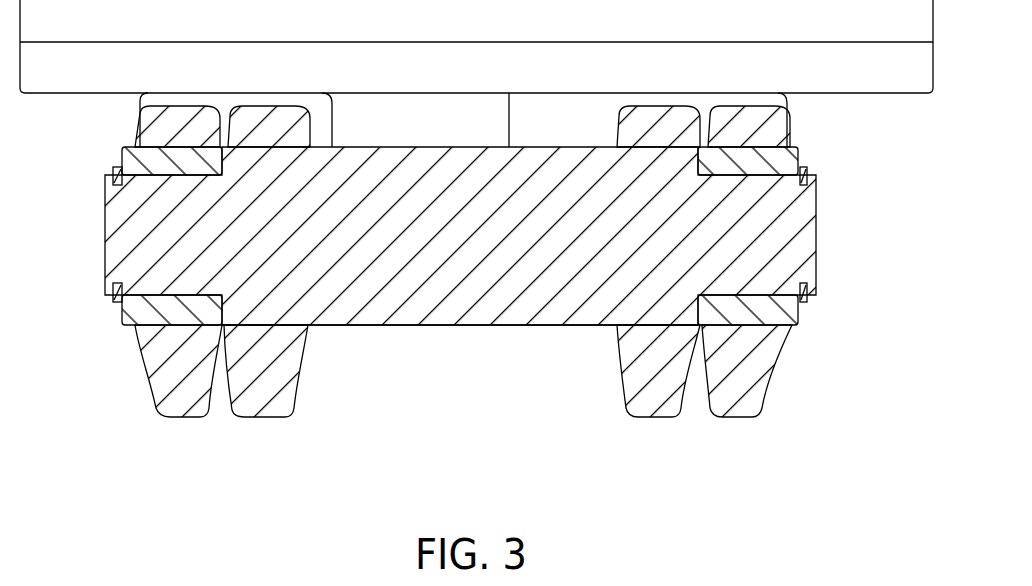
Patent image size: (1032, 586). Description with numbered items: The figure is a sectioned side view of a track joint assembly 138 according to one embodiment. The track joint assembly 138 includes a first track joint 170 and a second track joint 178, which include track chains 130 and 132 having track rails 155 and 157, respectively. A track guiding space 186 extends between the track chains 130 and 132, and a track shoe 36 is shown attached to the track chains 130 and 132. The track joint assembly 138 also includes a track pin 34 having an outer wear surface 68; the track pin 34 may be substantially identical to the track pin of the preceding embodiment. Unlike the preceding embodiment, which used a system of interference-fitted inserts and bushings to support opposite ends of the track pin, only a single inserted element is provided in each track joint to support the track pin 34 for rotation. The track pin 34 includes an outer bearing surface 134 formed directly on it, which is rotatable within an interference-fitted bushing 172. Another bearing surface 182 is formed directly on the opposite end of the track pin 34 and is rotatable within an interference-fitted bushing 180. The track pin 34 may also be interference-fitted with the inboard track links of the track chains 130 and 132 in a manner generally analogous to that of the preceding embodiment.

The track shoe 36 is at (913, 90).
The track joint assembly 138 is at (516, 265).
The track pin 34 is at (347, 315).
The outer wear surface 68 is at (422, 330).
The interference-fitted bushing 180 is at (133, 162).
The interference-fitted bushing 172 is at (798, 152).
The bearing surface 182 is at (157, 298).
The outer bearing surface 134 is at (723, 300).
The second track joint 178 is at (198, 392).
The track chain 132 is at (133, 380).
The track rail 157 is at (273, 425).
The track chain 130 is at (711, 392).
The first track joint 170 is at (785, 382).
The track rail 155 is at (634, 422).
The track guiding space 186 is at (617, 393).